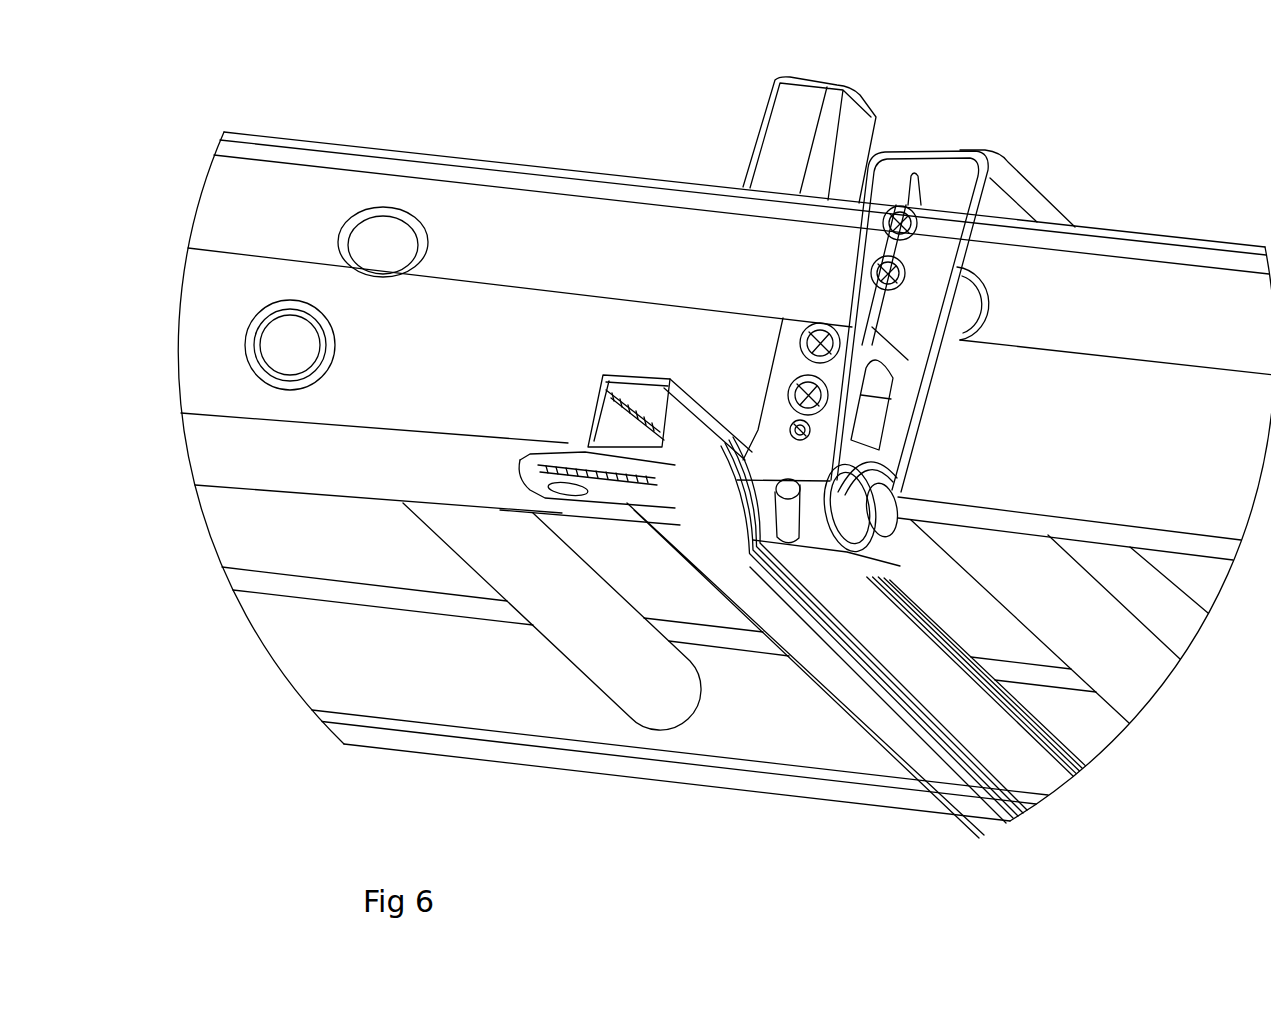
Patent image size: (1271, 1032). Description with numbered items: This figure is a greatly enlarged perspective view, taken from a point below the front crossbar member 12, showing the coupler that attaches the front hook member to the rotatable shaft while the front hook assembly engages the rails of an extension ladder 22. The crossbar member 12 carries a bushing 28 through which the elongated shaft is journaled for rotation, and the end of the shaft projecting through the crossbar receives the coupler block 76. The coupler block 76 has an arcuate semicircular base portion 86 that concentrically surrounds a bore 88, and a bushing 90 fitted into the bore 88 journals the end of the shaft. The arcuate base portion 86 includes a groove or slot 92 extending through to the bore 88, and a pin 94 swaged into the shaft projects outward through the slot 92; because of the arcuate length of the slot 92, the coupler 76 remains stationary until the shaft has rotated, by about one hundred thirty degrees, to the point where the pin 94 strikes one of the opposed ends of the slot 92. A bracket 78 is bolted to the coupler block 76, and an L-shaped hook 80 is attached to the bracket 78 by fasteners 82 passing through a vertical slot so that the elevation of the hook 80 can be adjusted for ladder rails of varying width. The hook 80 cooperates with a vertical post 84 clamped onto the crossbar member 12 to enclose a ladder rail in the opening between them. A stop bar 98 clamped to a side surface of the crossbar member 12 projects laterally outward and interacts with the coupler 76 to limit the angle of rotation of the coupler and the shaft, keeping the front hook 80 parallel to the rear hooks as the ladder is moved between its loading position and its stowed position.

The front crossbar member 12 is at (805, 670).
The extension ladder 22 is at (1138, 233).
The bushing 28 is at (711, 486).
The coupler block 76 is at (777, 360).
The bracket 78 is at (909, 323).
The L-shaped hook 80 is at (1033, 198).
The fasteners 82 is at (917, 220).
The vertical post 84 is at (797, 105).
The arcuate semicircular base portion 86 is at (818, 523).
The bore 88 is at (853, 463).
The bushing 90 is at (885, 558).
The groove (slot) 92 is at (797, 545).
The pin 94 is at (780, 477).
The stop bar 98 is at (706, 440).